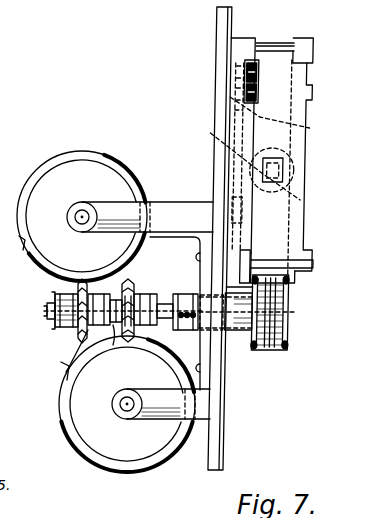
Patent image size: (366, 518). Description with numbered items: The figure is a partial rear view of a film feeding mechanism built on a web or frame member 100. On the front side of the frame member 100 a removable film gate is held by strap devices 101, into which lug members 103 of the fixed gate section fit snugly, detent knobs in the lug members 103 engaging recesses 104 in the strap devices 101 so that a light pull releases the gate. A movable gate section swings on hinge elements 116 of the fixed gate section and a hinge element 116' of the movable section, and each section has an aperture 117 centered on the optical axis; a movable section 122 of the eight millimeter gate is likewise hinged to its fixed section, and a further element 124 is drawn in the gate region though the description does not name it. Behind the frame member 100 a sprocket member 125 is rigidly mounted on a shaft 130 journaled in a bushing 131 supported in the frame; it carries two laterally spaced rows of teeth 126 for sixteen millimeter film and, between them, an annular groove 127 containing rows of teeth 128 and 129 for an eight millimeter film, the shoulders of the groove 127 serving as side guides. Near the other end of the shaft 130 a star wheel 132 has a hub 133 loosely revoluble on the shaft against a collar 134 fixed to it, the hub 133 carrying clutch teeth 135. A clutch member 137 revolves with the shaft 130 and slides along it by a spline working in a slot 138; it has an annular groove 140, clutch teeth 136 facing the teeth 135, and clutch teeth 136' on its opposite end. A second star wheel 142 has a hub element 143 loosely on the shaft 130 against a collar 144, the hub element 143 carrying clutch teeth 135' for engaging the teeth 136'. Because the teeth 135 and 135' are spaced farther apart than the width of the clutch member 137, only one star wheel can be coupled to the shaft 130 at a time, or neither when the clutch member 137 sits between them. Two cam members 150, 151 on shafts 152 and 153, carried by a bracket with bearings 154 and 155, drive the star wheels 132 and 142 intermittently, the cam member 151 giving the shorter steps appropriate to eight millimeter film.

The frame member 100 is at (217, 30).
The strap devices 101 is at (209, 141).
The lug members 103 is at (242, 80).
The recesses 104 is at (242, 90).
The hinge elements 116 is at (295, 81).
The hinge element 116' is at (298, 102).
The aperture 117 is at (286, 190).
The movable section 122 is at (271, 58).
The cam 124 is at (295, 163).
The sprocket member 125 is at (290, 312).
The teeth 126 is at (293, 345).
The annular groove 127 is at (279, 350).
The teeth 128 is at (273, 272).
The teeth 129 is at (275, 278).
The shaft 130 is at (46, 311).
The plate 131 is at (178, 326).
The star wheel 132 is at (93, 332).
The hub 133 is at (78, 330).
The collar 134 is at (62, 321).
The clutch teeth 135 is at (62, 351).
The clutch teeth 135' is at (99, 356).
The clutch teeth 136 is at (96, 296).
The clutch teeth 136' is at (161, 229).
The clutch member 137 is at (70, 370).
The slot 138 is at (133, 282).
The annular groove 140 is at (55, 296).
The star wheel 142 is at (131, 345).
The hub element 143 is at (150, 292).
The collar 144 is at (158, 333).
The cam member 150 is at (67, 157).
The cam member 151 is at (85, 457).
The shaft 152 is at (86, 205).
The shaft 153 is at (118, 406).
The bearings 154 is at (114, 210).
The bearings 155 is at (153, 421).